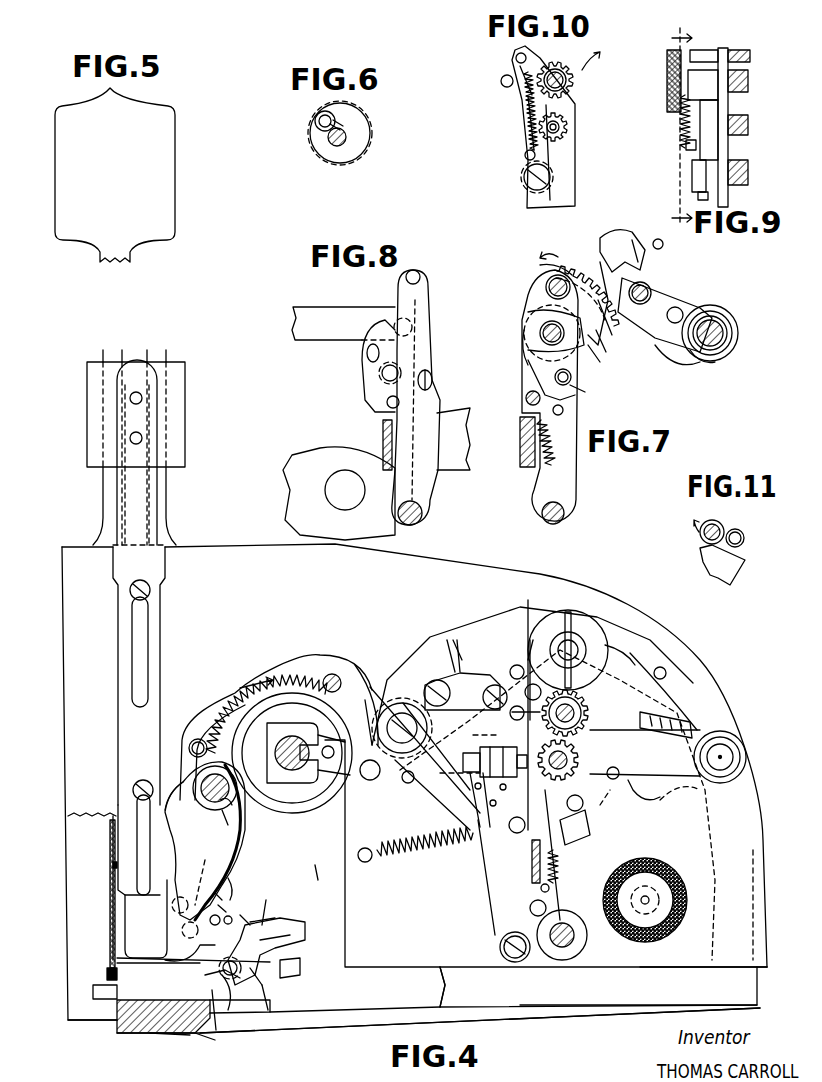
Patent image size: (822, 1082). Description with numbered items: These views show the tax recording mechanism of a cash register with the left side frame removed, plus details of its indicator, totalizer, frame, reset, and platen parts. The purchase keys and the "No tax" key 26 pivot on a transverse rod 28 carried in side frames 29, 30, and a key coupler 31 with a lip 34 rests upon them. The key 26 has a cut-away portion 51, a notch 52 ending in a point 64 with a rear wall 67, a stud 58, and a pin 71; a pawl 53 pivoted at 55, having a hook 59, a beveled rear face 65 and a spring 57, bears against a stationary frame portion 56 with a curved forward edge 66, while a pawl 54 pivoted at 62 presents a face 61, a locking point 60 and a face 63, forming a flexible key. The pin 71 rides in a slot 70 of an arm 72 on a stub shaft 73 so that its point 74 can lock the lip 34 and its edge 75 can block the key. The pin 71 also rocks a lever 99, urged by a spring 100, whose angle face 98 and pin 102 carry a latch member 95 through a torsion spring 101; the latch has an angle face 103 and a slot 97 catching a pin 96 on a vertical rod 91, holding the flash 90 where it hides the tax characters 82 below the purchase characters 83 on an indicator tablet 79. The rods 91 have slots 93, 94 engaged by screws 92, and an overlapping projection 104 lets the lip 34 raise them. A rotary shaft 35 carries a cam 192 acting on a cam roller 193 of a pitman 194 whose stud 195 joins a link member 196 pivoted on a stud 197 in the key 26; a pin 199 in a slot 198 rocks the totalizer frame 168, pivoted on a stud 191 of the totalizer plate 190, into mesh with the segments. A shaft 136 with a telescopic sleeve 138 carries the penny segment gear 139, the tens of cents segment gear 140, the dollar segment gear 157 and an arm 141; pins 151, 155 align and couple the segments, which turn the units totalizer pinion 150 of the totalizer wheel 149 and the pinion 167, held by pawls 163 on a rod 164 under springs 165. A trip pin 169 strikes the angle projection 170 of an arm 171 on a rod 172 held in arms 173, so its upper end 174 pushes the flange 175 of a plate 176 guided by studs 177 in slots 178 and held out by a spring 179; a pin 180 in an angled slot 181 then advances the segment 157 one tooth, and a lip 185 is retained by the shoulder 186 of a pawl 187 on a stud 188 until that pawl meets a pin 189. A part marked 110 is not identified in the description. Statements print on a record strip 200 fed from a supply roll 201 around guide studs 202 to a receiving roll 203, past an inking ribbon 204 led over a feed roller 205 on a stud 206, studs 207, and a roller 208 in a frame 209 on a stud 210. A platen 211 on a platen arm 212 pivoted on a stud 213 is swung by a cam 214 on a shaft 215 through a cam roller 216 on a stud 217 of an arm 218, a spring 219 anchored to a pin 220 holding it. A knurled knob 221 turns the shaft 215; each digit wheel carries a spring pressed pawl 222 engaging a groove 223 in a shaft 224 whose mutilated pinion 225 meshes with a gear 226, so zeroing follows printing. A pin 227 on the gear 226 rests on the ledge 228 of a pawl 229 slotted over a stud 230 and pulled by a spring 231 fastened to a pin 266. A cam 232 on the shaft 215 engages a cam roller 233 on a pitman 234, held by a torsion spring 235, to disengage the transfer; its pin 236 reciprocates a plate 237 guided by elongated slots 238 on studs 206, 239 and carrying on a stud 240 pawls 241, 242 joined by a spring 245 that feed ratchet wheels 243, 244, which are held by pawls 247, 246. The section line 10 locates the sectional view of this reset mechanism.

In FIG. 5, the indicator tablet 79 is at (58, 125).
In FIG. 4, the indicator tablet 79 is at (166, 350).
In FIG. 5, the purchase characters 83 is at (90, 137).
In FIG. 5, the tax characters 82 is at (62, 195).
In FIG. 6, the spring pressed pawl 222 is at (318, 115).
In FIG. 6, the groove 223 is at (330, 138).
In FIG. 6, the shaft 224 is at (348, 132).
In FIG. 10, the shaft 224 is at (556, 130).
In FIG. 9, the shaft 224 is at (748, 130).
In FIG. 7, the shaft 224 is at (540, 330).
In FIG. 10, the totalizer frame 168 is at (575, 172).
In FIG. 8, the totalizer frame 168 is at (428, 292).
In FIG. 7, the totalizer frame 168 is at (576, 483).
In FIG. 4, the totalizer frame 168 is at (587, 942).
In FIG. 10, the shaft 215 is at (575, 86).
In FIG. 9, the shaft 215 is at (748, 82).
In FIG. 7, the shaft 215 is at (548, 286).
In FIG. 11, the shaft 215 is at (710, 545).
In FIG. 4, the shaft 215 is at (667, 672).
In FIG. 10, the gear 226 is at (580, 96).
In FIG. 9, the gear 226 is at (722, 50).
In FIG. 10, the mutilated pinion 225 is at (569, 131).
In FIG. 9, the mutilated pinion 225 is at (748, 172).
In FIG. 10, the stud 230 is at (528, 180).
In FIG. 9, the stud 230 is at (692, 181).
In FIG. 10, the pawl 229 is at (535, 163).
In FIG. 9, the pawl 229 is at (698, 196).
In FIG. 10, the guide studs 202 is at (515, 48).
In FIG. 9, the guide studs 202 is at (750, 56).
In FIG. 4, the guide studs 202 is at (530, 640).
In FIG. 10, the studs 207 is at (501, 82).
In FIG. 4, the studs 207 is at (514, 665).
In FIG. 10, the pin 227 is at (524, 80).
In FIG. 10, the ledge 228 is at (528, 96).
In FIG. 10, the spring 231 is at (526, 122).
In FIG. 9, the spring 231 is at (680, 123).
In FIG. 10, the pin 266 is at (525, 156).
In FIG. 9, the pin 266 is at (686, 146).
In FIG. 9, the section line 10 is at (672, 125).
In FIG. 9, the knob 221 is at (667, 58).
In FIG. 8, the stud 195 is at (400, 320).
In FIG. 8, the pitman 194 is at (293, 330).
In FIG. 4, the pitman 194 is at (365, 690).
In FIG. 8, the link member 196 is at (362, 352).
In FIG. 8, the slot 198 is at (368, 360).
In FIG. 8, the pin 199 is at (383, 379).
In FIG. 8, the stud 197 is at (420, 476).
In FIG. 8, the No tax key 26 is at (462, 452).
In FIG. 4, the No tax key 26 is at (328, 985).
In FIG. 8, the stud 191 is at (424, 516).
In FIG. 7, the stud 191 is at (543, 519).
In FIG. 4, the stud 191 is at (563, 950).
In FIG. 8, the transverse rod 28 is at (330, 500).
In FIG. 7, the torsion spring 235 is at (522, 420).
In FIG. 7, the springs 165 is at (549, 457).
In FIG. 7, the cam 232 is at (548, 272).
In FIG. 7, the cam roller 233 is at (548, 302).
In FIG. 7, the angle projection 170 is at (545, 320).
In FIG. 7, the pivot pin 110 is at (542, 336).
In FIG. 4, the pivot pin 110 is at (545, 750).
In FIG. 7, the pinion 167 is at (524, 342).
In FIG. 7, the pawls 163 is at (526, 379).
In FIG. 4, the pawls 163 is at (556, 878).
In FIG. 7, the rod 164 is at (526, 399).
In FIG. 4, the rod 164 is at (532, 857).
In FIG. 7, the segment gear 157 is at (610, 252).
In FIG. 7, the pitman 234 is at (566, 247).
In FIG. 7, the stud 188 is at (615, 236).
In FIG. 7, the pawl 187 is at (638, 240).
In FIG. 7, the pin 189 is at (663, 244).
In FIG. 7, the studs 177 is at (650, 282).
In FIG. 7, the slots 178 is at (650, 292).
In FIG. 7, the spring 179 is at (603, 303).
In FIG. 7, the flange 175 is at (604, 332).
In FIG. 7, the upper end 174 is at (600, 342).
In FIG. 7, the plate 176 is at (598, 352).
In FIG. 7, the arm 171 is at (572, 380).
In FIG. 7, the rod 172 is at (575, 390).
In FIG. 7, the pin 180 is at (672, 345).
In FIG. 7, the angled slot 181 is at (680, 364).
In FIG. 7, the arm 141 is at (696, 362).
In FIG. 7, the lip 185 is at (700, 283).
In FIG. 7, the shoulder 186 is at (708, 294).
In FIG. 7, the shaft 136 is at (727, 326).
In FIG. 4, the shaft 136 is at (724, 752).
In FIG. 7, the telescopic sleeve 138 is at (723, 337).
In FIG. 11, the cam 214 is at (700, 536).
In FIG. 11, the cam roller 216 is at (744, 537).
In FIG. 11, the stud 217 is at (741, 543).
In FIG. 11, the arm 218 is at (735, 571).
In FIG. 4, the arm 218 is at (692, 716).
In FIG. 4, the flash 90 is at (87, 379).
In FIG. 4, the vertical rods 91 is at (118, 630).
In FIG. 4, the slot 93 is at (148, 650).
In FIG. 4, the screws 92 is at (150, 586).
In FIG. 4, the spring 100 is at (218, 738).
In FIG. 4, the stub shaft 73 is at (203, 784).
In FIG. 4, the arm 72 is at (190, 809).
In FIG. 4, the transverse rotary shaft 35 is at (285, 752).
In FIG. 4, the lever 99 is at (238, 868).
In FIG. 4, the cam 192 is at (325, 714).
In FIG. 4, the cam roller 193 is at (327, 760).
In FIG. 4, the ratchet wheel 244 is at (376, 665).
In FIG. 4, the elongated slots 238 is at (400, 700).
In FIG. 4, the stud 206 is at (415, 735).
In FIG. 4, the feed roller 205 is at (463, 760).
In FIG. 4, the inking ribbon 204 is at (452, 778).
In FIG. 4, the spring controlled pawl 246 is at (372, 780).
In FIG. 4, the platen arm 212 is at (478, 810).
In FIG. 4, the platen 211 is at (495, 794).
In FIG. 4, the stud 210 is at (512, 713).
In FIG. 4, the units totalizer pinion 150 is at (540, 758).
In FIG. 4, the roller 208 is at (430, 688).
In FIG. 4, the frame 209 is at (445, 668).
In FIG. 4, the stud 240 is at (453, 640).
In FIG. 4, the spring 245 is at (457, 640).
In FIG. 4, the pawl 242 is at (447, 640).
In FIG. 4, the pin 236 is at (533, 640).
In FIG. 4, the pawl 241 is at (543, 640).
In FIG. 4, the ratchet wheel 243 is at (569, 612).
In FIG. 4, the receiving roll 203 is at (586, 640).
In FIG. 4, the stud 239 is at (600, 630).
In FIG. 4, the spring controlled pawl 247 is at (620, 642).
In FIG. 4, the segment gear 140 is at (640, 690).
In FIG. 4, the plate 237 is at (660, 670).
In FIG. 4, the trip pin 169 is at (613, 780).
In FIG. 4, the segment gear 139 is at (640, 778).
In FIG. 4, the pin 151 is at (629, 804).
In FIG. 4, the totalizer wheel 149 is at (600, 816).
In FIG. 4, the pin 155 is at (665, 798).
In FIG. 4, the arms 173 is at (582, 838).
In FIG. 4, the record strip 200 is at (530, 909).
In FIG. 4, the stud 213 is at (518, 963).
In FIG. 4, the supply roll 201 is at (690, 906).
In FIG. 4, the totalizer plate 190 is at (695, 960).
In FIG. 4, the side frame 29 is at (440, 1005).
In FIG. 4, the side frame 30 is at (520, 1005).
In FIG. 4, the spring 219 is at (425, 851).
In FIG. 4, the pin 220 is at (364, 863).
In FIG. 4, the angle face 103 is at (150, 853).
In FIG. 4, the slot 94 is at (138, 870).
In FIG. 4, the pin 102 is at (112, 890).
In FIG. 4, the angle face 98 is at (178, 917).
In FIG. 4, the slot 70 is at (170, 930).
In FIG. 4, the pin 71 is at (180, 947).
In FIG. 4, the pivot 55 is at (180, 968).
In FIG. 4, the frame portion 56 is at (160, 1035).
In FIG. 4, the curved forward edge 66 is at (175, 1036).
In FIG. 4, the beveled rear face 65 is at (196, 1034).
In FIG. 4, the pawl 53 is at (205, 1040).
In FIG. 4, the spring 57 is at (215, 1032).
In FIG. 4, the stud 58 is at (228, 1008).
In FIG. 4, the notch 52 is at (226, 980).
In FIG. 4, the wall 67 is at (266, 1012).
In FIG. 4, the cut-away portion 51 is at (292, 978).
In FIG. 4, the overlapping projection 104 is at (275, 985).
In FIG. 4, the pivot 62 is at (236, 975).
In FIG. 4, the pawl 54 is at (268, 958).
In FIG. 4, the face 61 is at (264, 938).
In FIG. 4, the point 64 is at (262, 922).
In FIG. 4, the lip 34 is at (264, 923).
In FIG. 4, the key coupler 31 is at (305, 870).
In FIG. 4, the locking point 60 is at (222, 911).
In FIG. 4, the point 74 is at (249, 910).
In FIG. 4, the face 63 is at (232, 921).
In FIG. 4, the edge 75 is at (232, 878).
In FIG. 4, the hook 59 is at (220, 894).
In FIG. 4, the pin 96 is at (224, 906).
In FIG. 4, the latch member 95 is at (209, 873).
In FIG. 4, the slot 97 is at (226, 820).
In FIG. 4, the torsion spring 101 is at (230, 806).